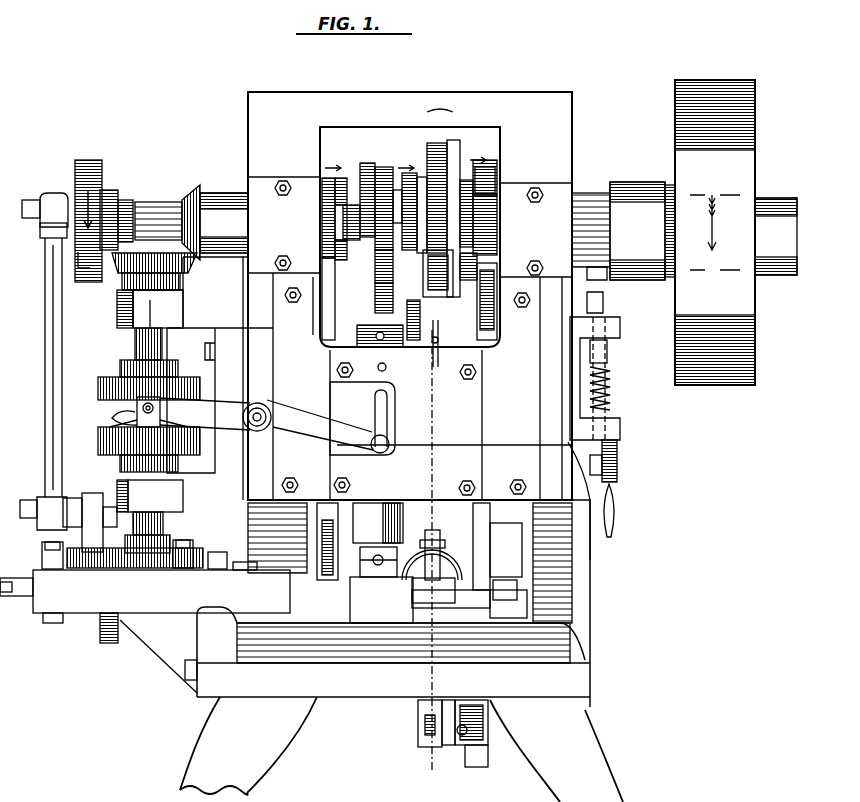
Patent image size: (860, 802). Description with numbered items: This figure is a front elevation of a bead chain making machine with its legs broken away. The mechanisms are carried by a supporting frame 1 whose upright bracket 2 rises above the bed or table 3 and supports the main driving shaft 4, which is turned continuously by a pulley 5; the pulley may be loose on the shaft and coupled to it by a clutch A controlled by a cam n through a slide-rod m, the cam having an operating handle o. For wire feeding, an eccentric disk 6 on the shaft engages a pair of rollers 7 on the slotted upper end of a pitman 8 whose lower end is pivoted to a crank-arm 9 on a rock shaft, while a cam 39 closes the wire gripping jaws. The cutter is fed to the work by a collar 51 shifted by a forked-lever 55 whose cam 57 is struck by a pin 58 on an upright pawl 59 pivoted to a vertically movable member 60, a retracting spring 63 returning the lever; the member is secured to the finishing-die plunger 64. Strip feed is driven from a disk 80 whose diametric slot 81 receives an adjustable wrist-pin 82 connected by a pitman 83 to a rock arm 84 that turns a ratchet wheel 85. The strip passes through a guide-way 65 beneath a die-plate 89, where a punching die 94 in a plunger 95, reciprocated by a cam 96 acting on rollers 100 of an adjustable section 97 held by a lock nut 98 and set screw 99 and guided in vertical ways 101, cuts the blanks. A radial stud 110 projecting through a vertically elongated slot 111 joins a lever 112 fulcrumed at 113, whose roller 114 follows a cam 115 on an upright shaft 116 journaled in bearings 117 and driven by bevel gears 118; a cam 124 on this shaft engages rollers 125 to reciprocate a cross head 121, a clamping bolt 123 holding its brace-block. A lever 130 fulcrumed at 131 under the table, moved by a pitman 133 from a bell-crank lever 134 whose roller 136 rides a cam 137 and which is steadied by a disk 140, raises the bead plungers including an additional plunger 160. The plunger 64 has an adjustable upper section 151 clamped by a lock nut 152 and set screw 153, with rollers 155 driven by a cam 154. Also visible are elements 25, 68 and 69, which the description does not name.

The supporting frame 1 is at (213, 697).
The upright bracket 2 is at (300, 92).
The main supporting bed or table 3 is at (580, 686).
The main driving shaft 4 is at (157, 202).
The pulley 5 is at (715, 385).
The eccentric disk 6 is at (100, 410).
The rollers 7 is at (322, 194).
The pitman 8 is at (326, 504).
The crank-arm 9 is at (347, 306).
The bar 25 is at (450, 573).
The cam 39 is at (420, 212).
The collar 51 is at (446, 569).
The forked-lever 55 is at (517, 598).
The cam 57 is at (508, 606).
The pin 58 is at (517, 584).
The upright pawl 59 is at (522, 563).
The vertically movable member 60 is at (505, 510).
The retracting spring 63 is at (508, 567).
The operating plunger 64 is at (478, 340).
The guide-way 65 is at (366, 580).
The spline shaft 68 is at (320, 580).
The frame block 69 is at (308, 531).
The disk 80 is at (91, 162).
The diametric slot 81 is at (78, 262).
The wrist-pin 82 is at (74, 193).
The pitman 83 is at (46, 344).
The rock arm 84 is at (90, 497).
The ratchet wheel 85 is at (110, 644).
The die-plate 89 is at (355, 580).
The punching die 94 is at (378, 560).
The vertically movable plunger 95 is at (378, 505).
The cam 96 is at (378, 258).
The adjustable section 97 is at (367, 163).
The lock nut 98 is at (365, 333).
The set screw 99 is at (378, 367).
The rollers 100 is at (384, 172).
The vertical ways 101 is at (340, 375).
The radial stud 110 is at (388, 448).
The vertically elongated slot 111 is at (387, 416).
The lever 112 is at (294, 418).
The fulcrum 113 is at (258, 432).
The stud or roller 114 is at (154, 408).
The cam 115 is at (117, 430).
The upright shaft 116 is at (136, 348).
The bearings 117 is at (118, 312).
The bevel gears 118 is at (185, 262).
The cross head 121 is at (28, 598).
The clamping bolt 123 is at (240, 554).
The cam 124 is at (112, 568).
The rollers 125 is at (62, 570).
The lever 130 is at (490, 731).
The fulcrum 131 is at (462, 748).
The rod or pitman 133 is at (498, 330).
The bell-crank lever 134 is at (497, 168).
The roller 136 is at (497, 180).
The cam 137 is at (490, 234).
The disk 140 is at (474, 216).
The adjustable upper section 151 is at (457, 150).
The lock nut 152 is at (425, 335).
The set screw 153 is at (440, 350).
The cam 154 is at (435, 150).
The rollers 155 is at (442, 150).
The additional plunger 160 is at (425, 722).
The clutch A is at (600, 195).
The slide-rod m is at (607, 351).
The cam n is at (618, 464).
The operating handle o is at (614, 511).